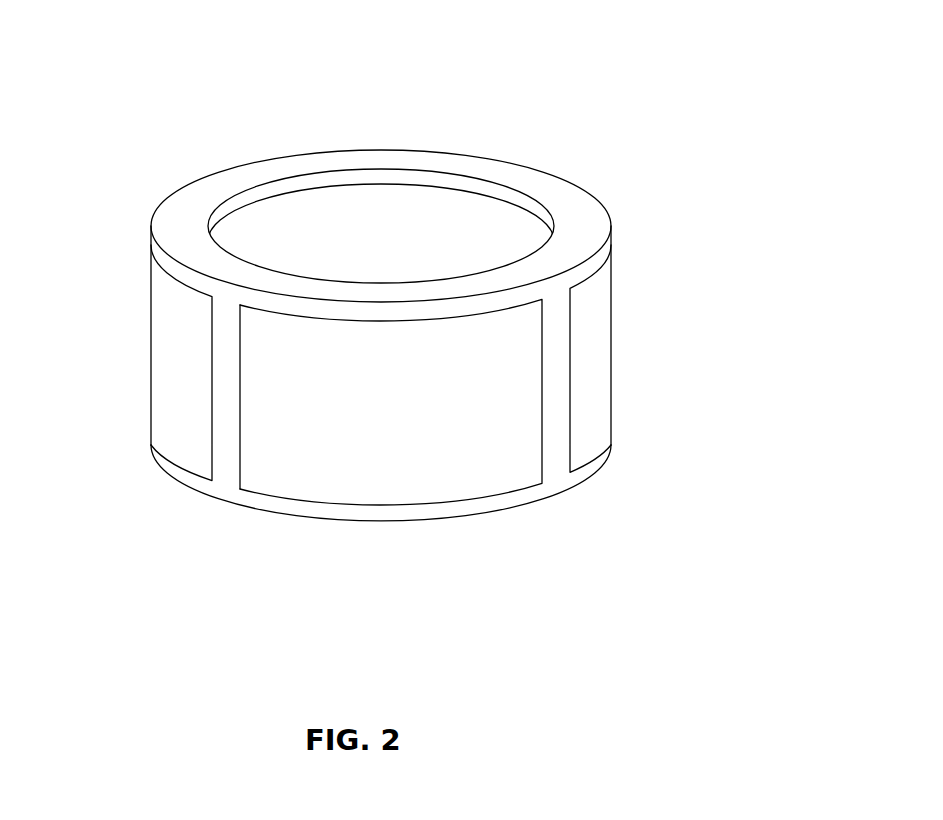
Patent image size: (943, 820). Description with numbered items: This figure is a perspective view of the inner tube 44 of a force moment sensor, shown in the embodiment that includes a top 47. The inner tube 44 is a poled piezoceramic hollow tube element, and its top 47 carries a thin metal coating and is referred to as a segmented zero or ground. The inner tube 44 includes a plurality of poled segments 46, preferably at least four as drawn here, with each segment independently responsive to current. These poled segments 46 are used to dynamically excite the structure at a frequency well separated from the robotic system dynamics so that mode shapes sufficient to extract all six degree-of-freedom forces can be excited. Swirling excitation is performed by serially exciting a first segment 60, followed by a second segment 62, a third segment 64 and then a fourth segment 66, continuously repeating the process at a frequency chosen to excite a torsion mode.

The inner tube 44 is at (688, 165).
The poled segments 46 is at (452, 462).
The top 47 is at (387, 210).
The first segment 60 is at (175, 393).
The second segment 62 is at (290, 468).
The third segment 64 is at (595, 395).
The fourth segment 66 is at (490, 146).